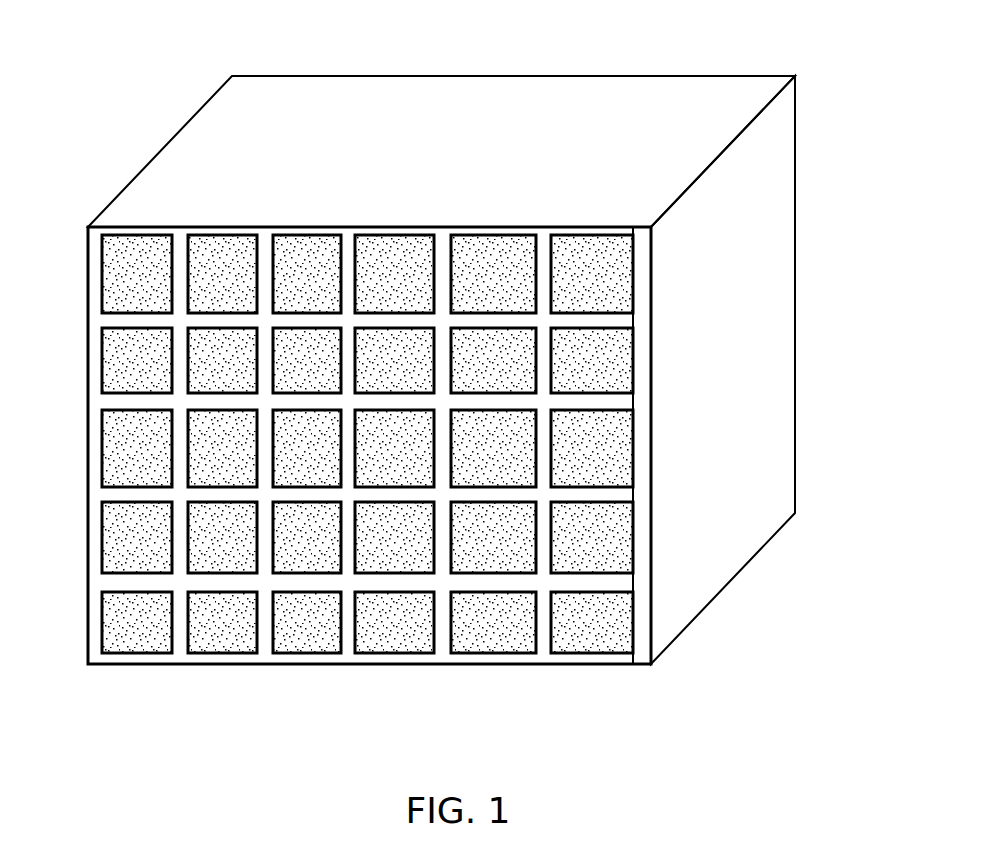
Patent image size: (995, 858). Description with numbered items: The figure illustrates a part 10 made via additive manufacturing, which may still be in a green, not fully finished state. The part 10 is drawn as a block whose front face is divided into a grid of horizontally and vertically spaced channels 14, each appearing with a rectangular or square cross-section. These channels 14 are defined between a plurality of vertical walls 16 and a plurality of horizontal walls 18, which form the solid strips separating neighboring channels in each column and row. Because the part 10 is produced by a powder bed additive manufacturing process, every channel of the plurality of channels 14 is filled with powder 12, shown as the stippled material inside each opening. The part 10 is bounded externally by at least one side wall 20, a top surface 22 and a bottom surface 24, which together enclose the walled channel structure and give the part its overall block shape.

The part 10 is at (650, 52).
The powder 12 is at (113, 276).
The horizontally and vertically spaced channels 14 is at (110, 552).
The vertical walls 16 is at (265, 658).
The horizontal walls 18 is at (97, 402).
The side wall 20 is at (742, 546).
The top surface 22 is at (466, 85).
The bottom surface 24 is at (603, 672).